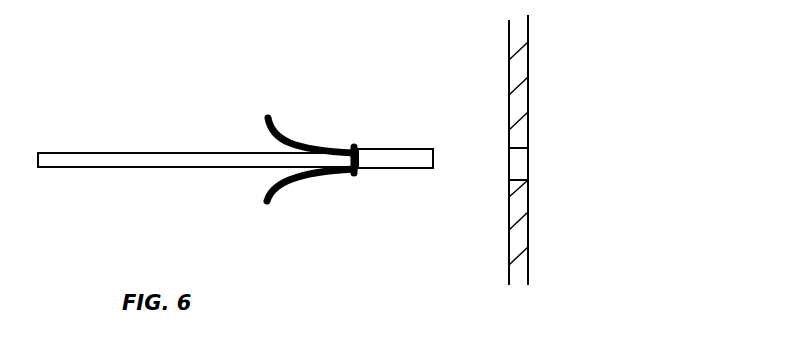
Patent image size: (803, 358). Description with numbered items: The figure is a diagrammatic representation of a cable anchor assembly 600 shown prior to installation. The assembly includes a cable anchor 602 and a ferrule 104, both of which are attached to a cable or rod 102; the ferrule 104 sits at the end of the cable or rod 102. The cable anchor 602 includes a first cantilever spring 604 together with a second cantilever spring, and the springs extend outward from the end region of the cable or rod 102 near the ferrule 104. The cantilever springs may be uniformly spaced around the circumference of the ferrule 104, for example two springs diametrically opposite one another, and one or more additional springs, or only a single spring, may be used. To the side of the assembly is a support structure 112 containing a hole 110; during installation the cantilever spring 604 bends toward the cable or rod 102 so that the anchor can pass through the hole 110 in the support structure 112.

The cable or rod 102 is at (90, 153).
The ferrule 104 is at (403, 149).
The hole 110 is at (528, 167).
The support structure 112 is at (509, 75).
The cable anchor assembly 600 is at (133, 183).
The cable anchor 602 is at (433, 210).
The first cantilever spring 604 is at (305, 177).